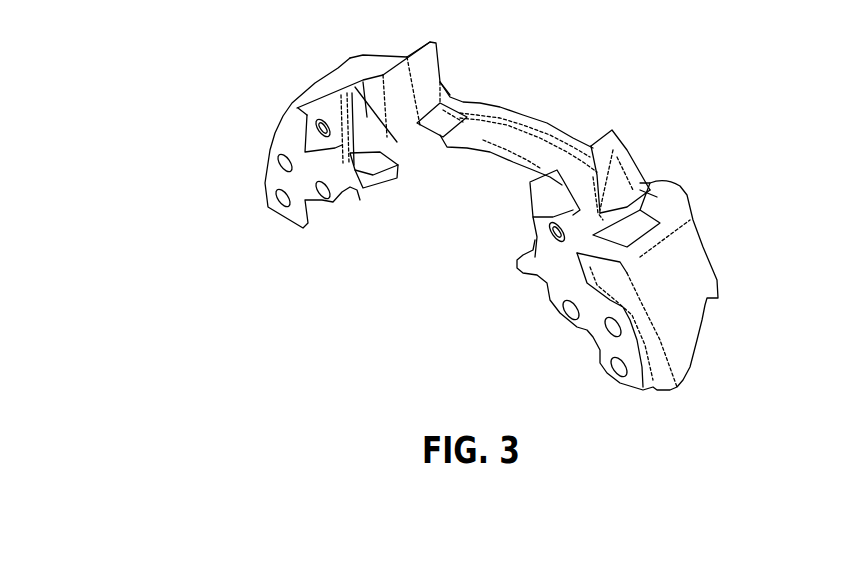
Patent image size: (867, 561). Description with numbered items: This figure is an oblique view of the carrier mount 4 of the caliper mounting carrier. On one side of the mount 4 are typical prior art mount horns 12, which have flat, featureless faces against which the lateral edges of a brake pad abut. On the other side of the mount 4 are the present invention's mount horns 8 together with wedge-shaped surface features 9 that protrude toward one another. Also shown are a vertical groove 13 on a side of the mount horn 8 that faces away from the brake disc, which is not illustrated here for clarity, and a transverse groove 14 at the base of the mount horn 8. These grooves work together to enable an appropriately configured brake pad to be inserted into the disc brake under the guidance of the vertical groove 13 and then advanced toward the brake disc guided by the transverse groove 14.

The carrier mount 4 is at (370, 55).
The mount horn 8 is at (335, 100).
The wedge-shaped surface feature 9 is at (385, 137).
The prior art mount horn 12 is at (440, 52).
The vertical groove 13 is at (298, 150).
The transverse groove 14 is at (350, 196).